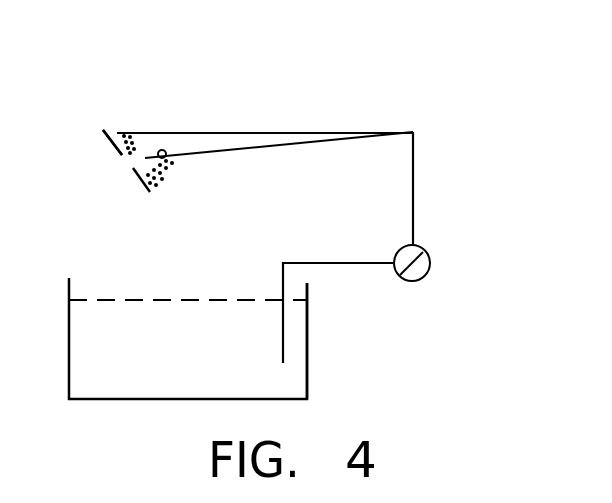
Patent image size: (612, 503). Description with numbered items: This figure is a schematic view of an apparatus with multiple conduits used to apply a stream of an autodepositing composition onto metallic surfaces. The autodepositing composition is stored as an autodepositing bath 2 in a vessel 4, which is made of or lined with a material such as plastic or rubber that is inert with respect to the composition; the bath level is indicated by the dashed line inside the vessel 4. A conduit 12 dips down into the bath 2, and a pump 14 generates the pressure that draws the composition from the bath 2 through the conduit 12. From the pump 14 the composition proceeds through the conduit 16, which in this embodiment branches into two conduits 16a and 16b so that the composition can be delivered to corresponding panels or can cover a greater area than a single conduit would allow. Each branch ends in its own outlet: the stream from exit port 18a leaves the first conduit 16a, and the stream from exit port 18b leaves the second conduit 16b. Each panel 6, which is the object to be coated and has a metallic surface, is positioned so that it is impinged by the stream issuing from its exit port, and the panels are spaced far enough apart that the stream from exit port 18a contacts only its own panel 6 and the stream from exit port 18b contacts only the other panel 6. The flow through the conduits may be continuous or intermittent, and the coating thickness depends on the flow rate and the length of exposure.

The autodepositing bath 2 is at (290, 388).
The vessel 4 is at (308, 333).
The panel 6 is at (112, 147).
The conduit 12 is at (282, 277).
The pump 14 is at (427, 277).
The conduit 16 is at (415, 172).
The first conduit 16a is at (187, 133).
The second conduit 16b is at (297, 148).
The first exit port 18a is at (125, 132).
The second exit port 18b is at (170, 157).